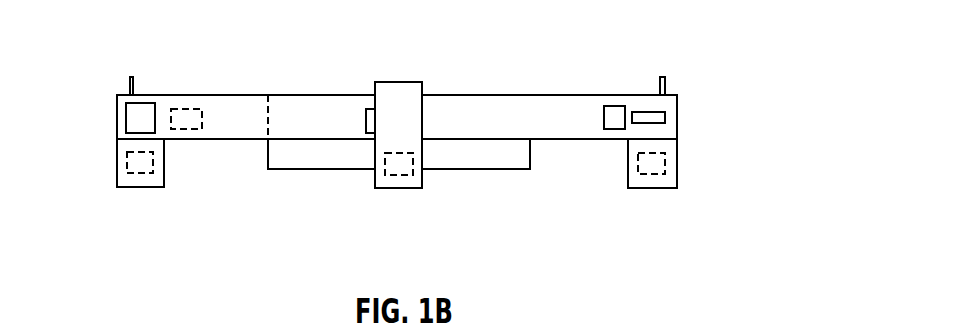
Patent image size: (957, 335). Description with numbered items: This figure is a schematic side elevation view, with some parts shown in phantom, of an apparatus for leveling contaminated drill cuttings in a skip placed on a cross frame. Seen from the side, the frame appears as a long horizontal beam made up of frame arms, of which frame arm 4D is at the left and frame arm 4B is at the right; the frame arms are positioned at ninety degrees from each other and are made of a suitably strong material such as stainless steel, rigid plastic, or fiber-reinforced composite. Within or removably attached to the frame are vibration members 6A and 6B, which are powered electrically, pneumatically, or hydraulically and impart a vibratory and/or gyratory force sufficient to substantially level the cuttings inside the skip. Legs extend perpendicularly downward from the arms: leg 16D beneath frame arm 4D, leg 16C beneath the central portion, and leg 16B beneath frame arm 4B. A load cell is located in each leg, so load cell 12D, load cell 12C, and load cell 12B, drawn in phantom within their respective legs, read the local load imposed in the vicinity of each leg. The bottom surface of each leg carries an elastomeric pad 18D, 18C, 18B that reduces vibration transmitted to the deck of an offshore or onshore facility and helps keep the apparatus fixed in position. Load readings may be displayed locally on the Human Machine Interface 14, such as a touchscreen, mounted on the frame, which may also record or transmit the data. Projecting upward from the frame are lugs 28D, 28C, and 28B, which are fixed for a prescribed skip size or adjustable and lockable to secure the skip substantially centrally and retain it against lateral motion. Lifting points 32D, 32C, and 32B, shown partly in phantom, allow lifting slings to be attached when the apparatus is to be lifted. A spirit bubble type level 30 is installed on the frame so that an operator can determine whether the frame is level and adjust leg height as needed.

The frame arm 4D is at (239, 110).
The frame arm 4B is at (547, 97).
The vibration member 6A is at (308, 160).
The vibration member 6B is at (515, 160).
The load cell 12D is at (120, 163).
The load cell 12C is at (380, 168).
The load cell 12B is at (633, 163).
The Human Machine Interface 14 is at (130, 123).
The leg 16D is at (153, 177).
The leg 16C is at (415, 173).
The leg 16B is at (672, 174).
The elastomeric pad 18D is at (142, 188).
The elastomeric pad 18C is at (398, 188).
The elastomeric pad 18B is at (652, 188).
The lug 28D is at (128, 82).
The lug 28C is at (422, 88).
The lug 28B is at (668, 83).
The spirit bubble type level 30 is at (658, 117).
The lifting point 32D is at (175, 106).
The lifting point 32C is at (366, 122).
The lifting point 32B is at (614, 106).